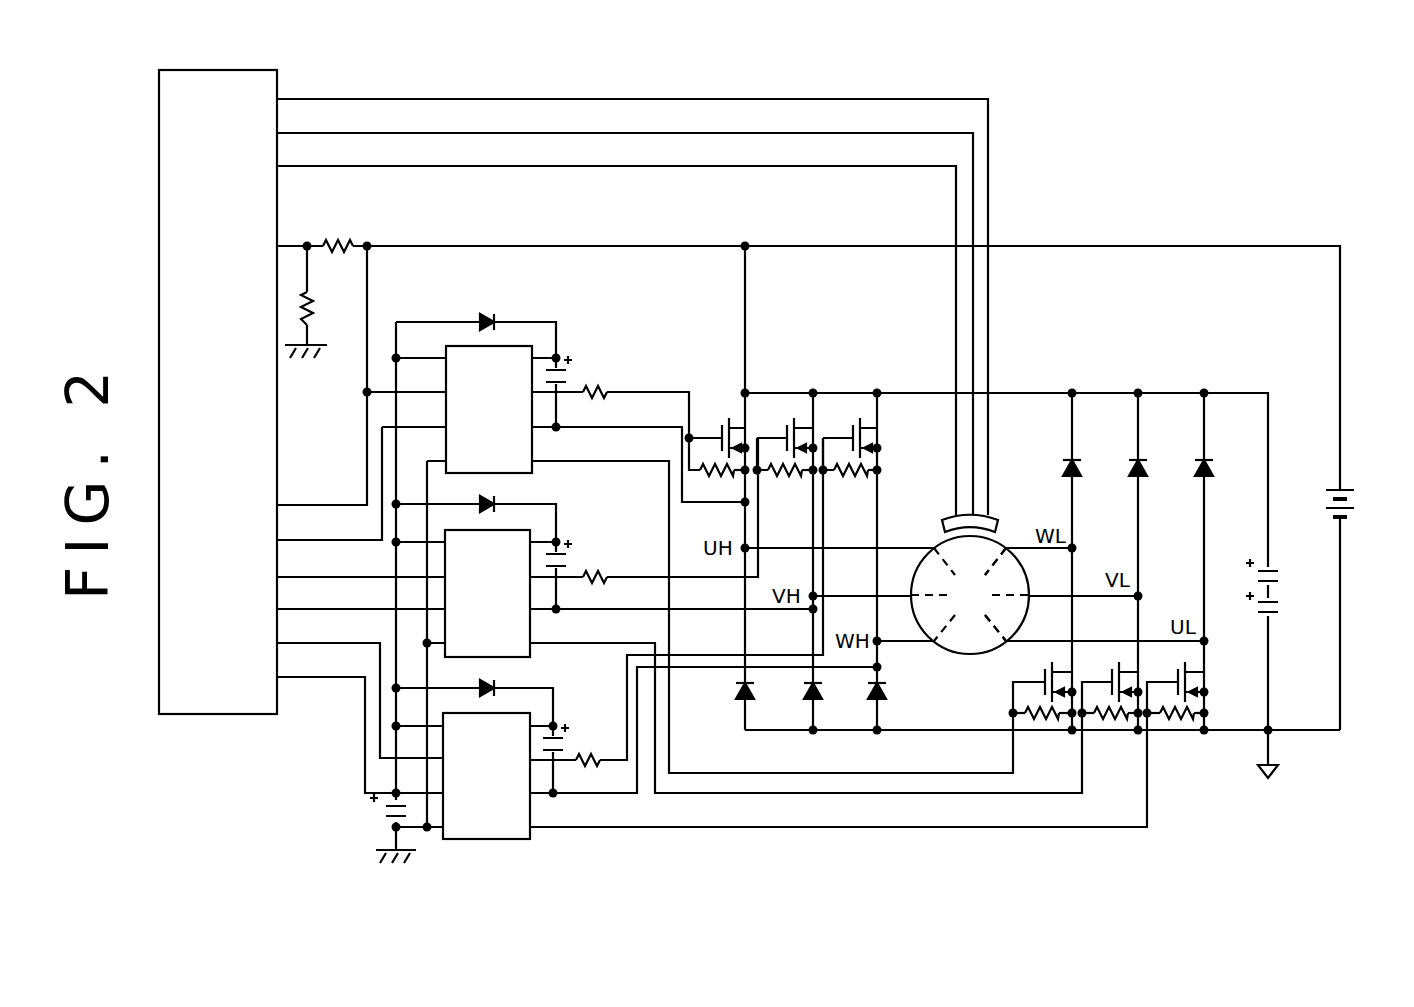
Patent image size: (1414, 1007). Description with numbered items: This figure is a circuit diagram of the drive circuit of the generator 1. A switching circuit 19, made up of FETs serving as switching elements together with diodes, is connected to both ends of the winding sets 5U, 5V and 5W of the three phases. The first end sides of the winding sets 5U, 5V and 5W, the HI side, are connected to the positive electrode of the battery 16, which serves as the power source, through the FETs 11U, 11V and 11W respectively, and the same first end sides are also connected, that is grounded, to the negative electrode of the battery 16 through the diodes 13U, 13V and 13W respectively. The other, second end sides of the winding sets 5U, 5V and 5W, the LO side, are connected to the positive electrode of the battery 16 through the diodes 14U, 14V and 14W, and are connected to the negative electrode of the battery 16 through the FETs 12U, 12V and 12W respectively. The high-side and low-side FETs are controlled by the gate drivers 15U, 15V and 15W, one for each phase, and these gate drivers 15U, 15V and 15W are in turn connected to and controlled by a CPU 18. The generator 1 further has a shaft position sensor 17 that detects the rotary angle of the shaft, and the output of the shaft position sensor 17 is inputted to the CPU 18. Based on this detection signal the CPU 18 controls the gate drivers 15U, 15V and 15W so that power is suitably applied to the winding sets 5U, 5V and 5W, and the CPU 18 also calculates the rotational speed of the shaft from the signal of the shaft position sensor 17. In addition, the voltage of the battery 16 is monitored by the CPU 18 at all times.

The generator 1 is at (947, 653).
The U-phase winding set 5U is at (993, 637).
The V-phase winding set 5V is at (1018, 592).
The W-phase winding set 5W is at (1007, 545).
The FET 11U is at (723, 418).
The FET 11V is at (767, 430).
The FET 11W is at (833, 430).
The FET 12U is at (1207, 673).
The FET 12V is at (1107, 687).
The FET 12W is at (1038, 672).
The diode 13U is at (733, 693).
The diode 13V is at (800, 692).
The diode 13W is at (865, 692).
The diode 14U is at (1211, 470).
The diode 14V is at (1145, 470).
The diode 14W is at (1078, 470).
The gate driver 15U is at (512, 363).
The gate driver 15V is at (512, 545).
The gate driver 15W is at (512, 728).
The battery 16 is at (1360, 506).
The shaft position sensor 17 is at (997, 508).
The CPU 18 is at (192, 716).
The switching circuit 19 is at (1178, 538).